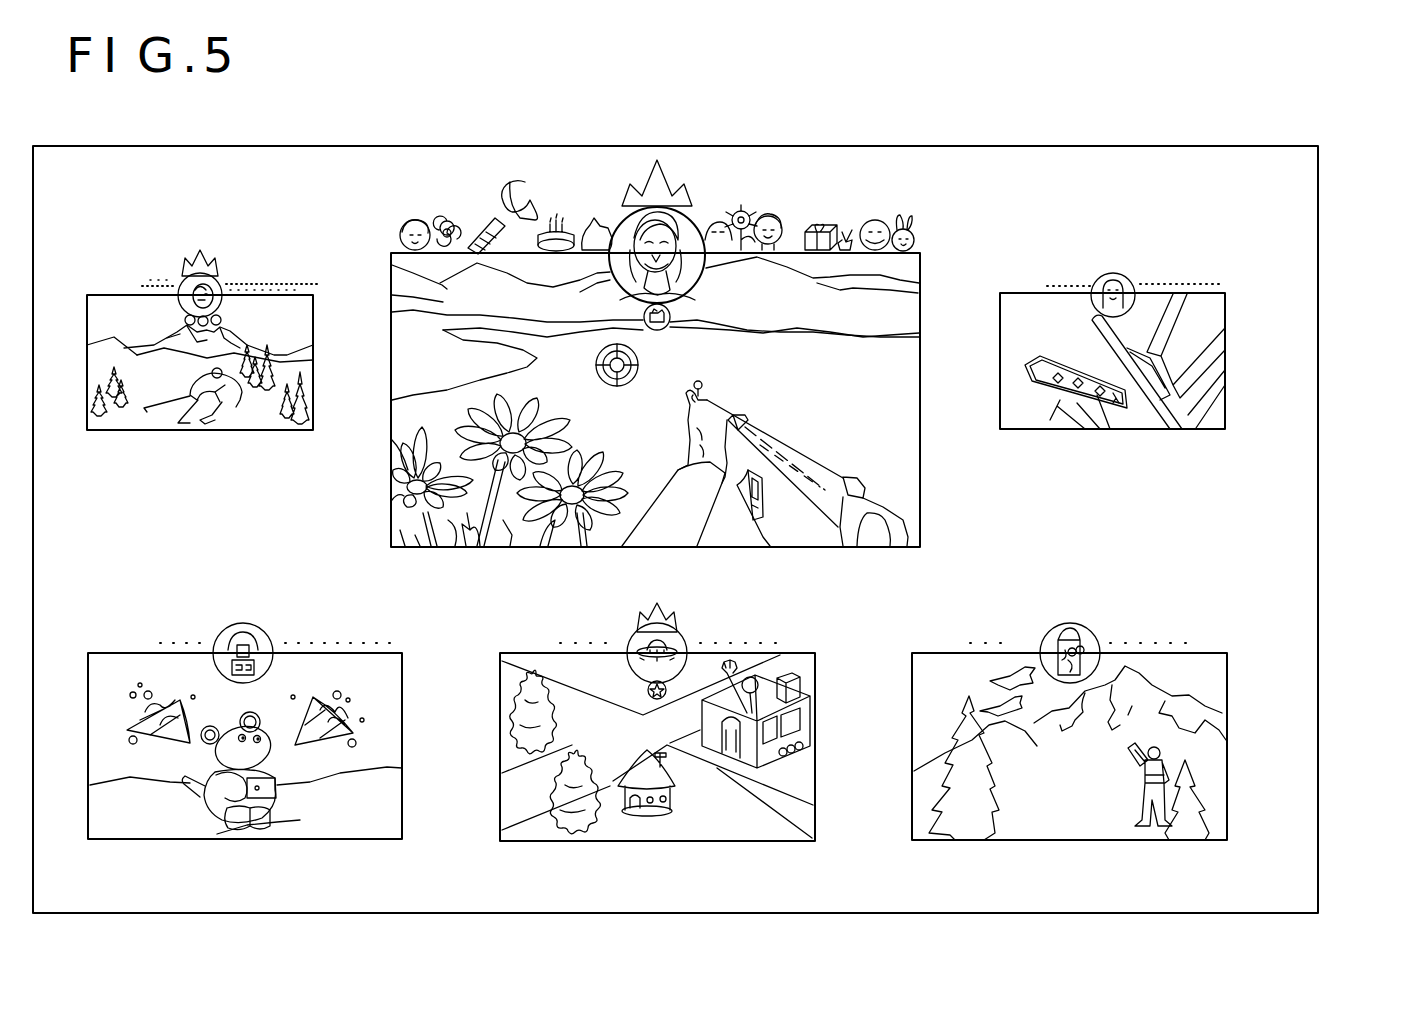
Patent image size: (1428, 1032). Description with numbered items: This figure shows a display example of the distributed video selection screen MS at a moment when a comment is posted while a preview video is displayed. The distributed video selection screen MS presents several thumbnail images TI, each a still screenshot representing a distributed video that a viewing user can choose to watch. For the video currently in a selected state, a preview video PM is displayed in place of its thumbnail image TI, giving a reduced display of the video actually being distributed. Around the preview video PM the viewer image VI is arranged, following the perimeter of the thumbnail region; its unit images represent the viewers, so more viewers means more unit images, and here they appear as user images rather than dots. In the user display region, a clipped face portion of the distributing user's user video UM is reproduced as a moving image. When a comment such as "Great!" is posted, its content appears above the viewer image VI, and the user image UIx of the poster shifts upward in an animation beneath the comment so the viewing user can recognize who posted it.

The distributed video selection screen MS is at (1319, 660).
The preview video PM is at (921, 490).
The thumbnail image TI is at (272, 430).
The user video UM is at (697, 220).
The viewer image VI is at (835, 200).
The user image UIx is at (495, 190).